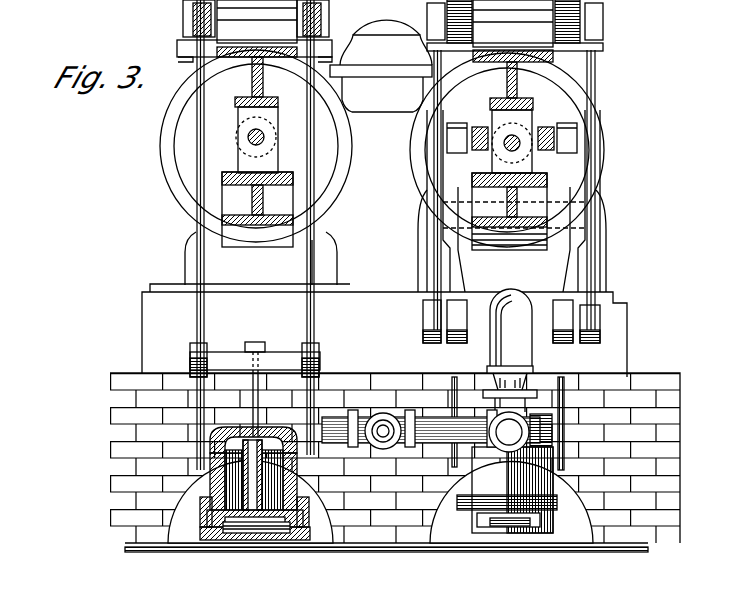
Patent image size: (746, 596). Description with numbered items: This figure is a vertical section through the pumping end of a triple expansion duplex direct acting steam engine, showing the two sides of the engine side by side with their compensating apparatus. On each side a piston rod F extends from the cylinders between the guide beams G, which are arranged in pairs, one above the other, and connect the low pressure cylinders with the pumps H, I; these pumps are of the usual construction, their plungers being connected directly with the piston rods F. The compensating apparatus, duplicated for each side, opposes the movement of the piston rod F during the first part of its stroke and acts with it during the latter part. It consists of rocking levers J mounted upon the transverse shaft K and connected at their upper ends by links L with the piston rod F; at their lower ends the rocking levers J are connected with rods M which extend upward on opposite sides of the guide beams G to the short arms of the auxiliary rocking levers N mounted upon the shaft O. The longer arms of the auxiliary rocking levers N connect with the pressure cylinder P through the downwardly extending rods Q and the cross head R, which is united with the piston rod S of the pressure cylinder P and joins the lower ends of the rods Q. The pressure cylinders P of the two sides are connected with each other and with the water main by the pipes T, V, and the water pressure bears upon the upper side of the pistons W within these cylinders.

The guide beam G is at (385, 148).
The pump I is at (256, 142).
The piston rod F is at (384, 143).
The auxiliary rocking lever N is at (513, 21).
The shaft O is at (607, 25).
The link L is at (512, 131).
The pump H is at (603, 147).
The transverse shaft K is at (570, 200).
The rocking lever J is at (513, 201).
The rod M is at (432, 263).
The downwardly extending rod Q is at (250, 235).
The cross head R is at (255, 356).
The piston rod of pressure cylinder S is at (260, 392).
The pipe T is at (324, 420).
The pipe V is at (384, 414).
The pressure cylinder P is at (200, 556).
The piston W is at (262, 545).